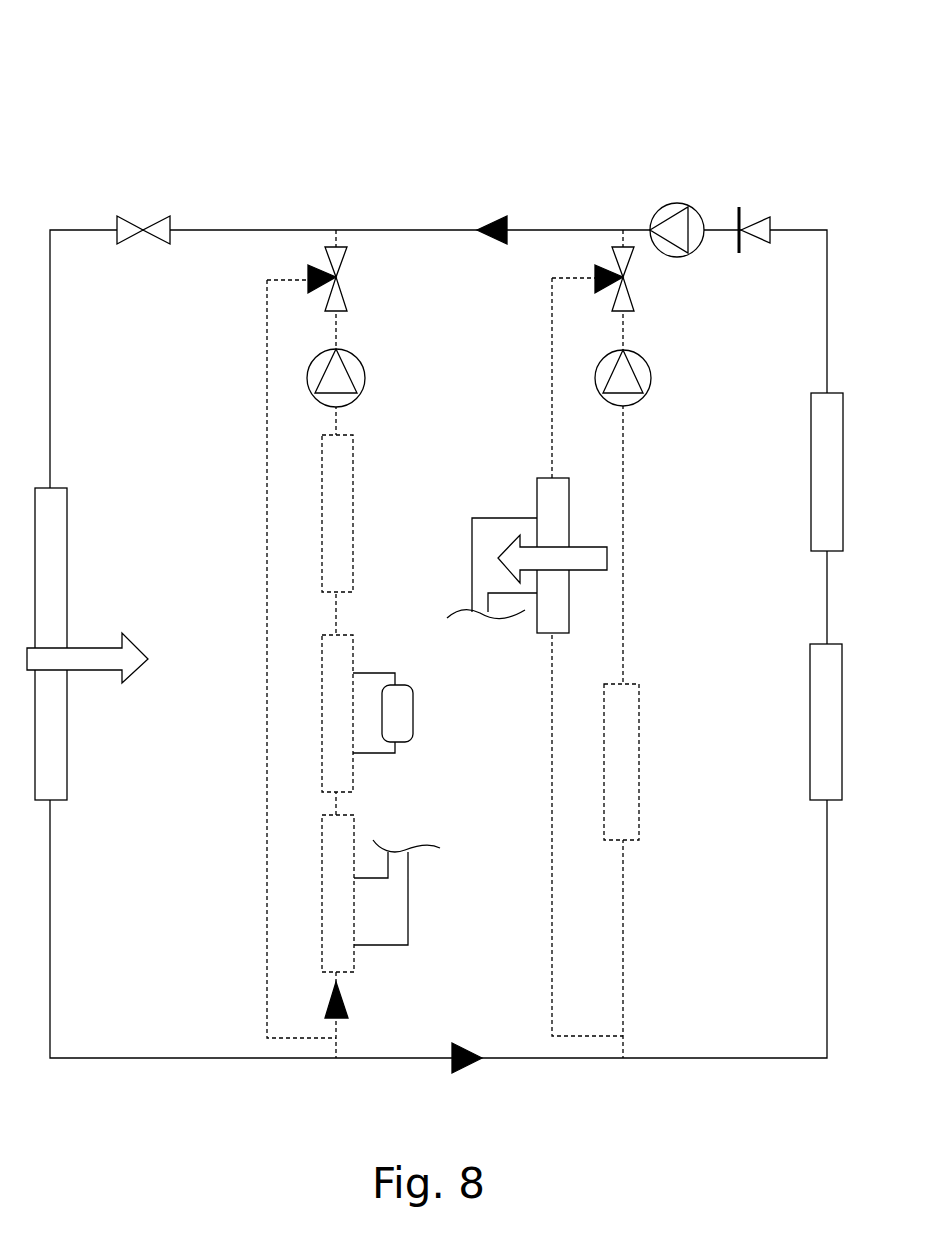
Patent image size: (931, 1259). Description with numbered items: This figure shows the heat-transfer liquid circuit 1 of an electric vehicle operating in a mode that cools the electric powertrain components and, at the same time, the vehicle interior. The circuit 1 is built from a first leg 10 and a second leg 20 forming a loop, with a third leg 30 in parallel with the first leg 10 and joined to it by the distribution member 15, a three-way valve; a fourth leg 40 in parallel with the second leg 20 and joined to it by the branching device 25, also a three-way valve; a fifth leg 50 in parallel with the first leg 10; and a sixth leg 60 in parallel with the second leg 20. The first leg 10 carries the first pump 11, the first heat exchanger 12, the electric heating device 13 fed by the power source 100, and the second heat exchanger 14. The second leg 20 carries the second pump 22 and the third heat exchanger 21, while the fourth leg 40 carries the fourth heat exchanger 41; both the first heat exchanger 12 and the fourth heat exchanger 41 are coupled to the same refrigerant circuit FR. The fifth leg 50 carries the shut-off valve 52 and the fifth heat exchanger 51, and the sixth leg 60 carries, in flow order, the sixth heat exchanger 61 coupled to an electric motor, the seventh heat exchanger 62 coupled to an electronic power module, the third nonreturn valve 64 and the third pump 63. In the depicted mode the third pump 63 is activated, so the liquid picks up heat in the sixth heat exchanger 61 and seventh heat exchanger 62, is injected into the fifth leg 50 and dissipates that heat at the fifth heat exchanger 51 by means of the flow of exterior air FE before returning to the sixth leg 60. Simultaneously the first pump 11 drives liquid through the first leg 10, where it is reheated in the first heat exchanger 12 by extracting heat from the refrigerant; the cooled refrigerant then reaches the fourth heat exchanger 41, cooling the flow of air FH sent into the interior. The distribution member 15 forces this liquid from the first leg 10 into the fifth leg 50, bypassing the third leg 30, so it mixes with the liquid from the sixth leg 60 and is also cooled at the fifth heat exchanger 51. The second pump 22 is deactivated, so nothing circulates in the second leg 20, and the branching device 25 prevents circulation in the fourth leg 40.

The heat-transfer liquid circuit 1 is at (366, 160).
The first leg 10 is at (338, 603).
The first pump 11 is at (365, 372).
The first heat exchanger 12 is at (345, 960).
The electric heating device 13 is at (343, 783).
The second heat exchanger 14 is at (353, 488).
The distribution member 15 is at (340, 280).
The second leg 20 is at (623, 527).
The third heat exchanger 21 is at (639, 738).
The second pump 22 is at (648, 373).
The branching device 25 is at (627, 280).
The third leg 30 is at (267, 420).
The fourth leg 40 is at (552, 738).
The fourth heat exchanger 41 is at (537, 498).
The fifth leg 50 is at (50, 878).
The fifth heat exchanger 51 is at (67, 544).
The shut-off valve 52 is at (157, 218).
The sixth leg 60 is at (826, 947).
The sixth heat exchanger 61 is at (810, 754).
The seventh heat exchanger 62 is at (811, 515).
The third pump 63 is at (660, 205).
The third nonreturn valve 64 is at (760, 218).
The power source 100 is at (397, 712).
The flow of exterior air FE is at (95, 648).
The flow of air intended for the vehicle interior FH is at (583, 562).
The refrigerant circuit FR is at (472, 558).